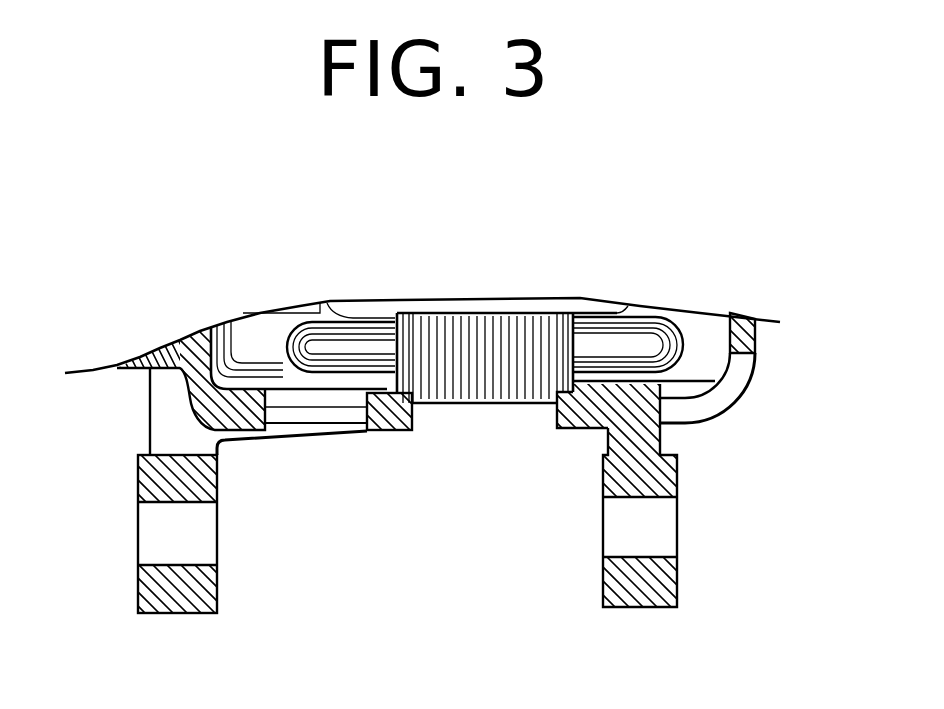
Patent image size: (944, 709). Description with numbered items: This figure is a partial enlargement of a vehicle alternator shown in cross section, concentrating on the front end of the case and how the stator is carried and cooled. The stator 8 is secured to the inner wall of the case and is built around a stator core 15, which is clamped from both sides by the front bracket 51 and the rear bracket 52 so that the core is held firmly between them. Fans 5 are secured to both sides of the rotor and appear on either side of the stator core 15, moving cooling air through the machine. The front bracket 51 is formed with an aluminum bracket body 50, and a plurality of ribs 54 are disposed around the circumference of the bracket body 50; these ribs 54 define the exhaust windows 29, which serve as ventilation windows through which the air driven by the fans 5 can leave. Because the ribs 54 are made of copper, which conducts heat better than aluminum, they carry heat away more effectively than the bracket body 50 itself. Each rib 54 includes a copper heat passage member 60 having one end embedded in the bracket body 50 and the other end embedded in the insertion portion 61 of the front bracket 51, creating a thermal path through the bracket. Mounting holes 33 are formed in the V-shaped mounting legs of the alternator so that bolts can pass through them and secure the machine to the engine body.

The stator 8 is at (491, 380).
The rear bracket 52 is at (118, 368).
The stator core 15 is at (474, 348).
The fans 5 is at (355, 347).
The exhaust windows 29 is at (292, 397).
The ribs 54 is at (347, 432).
The heat passage members 60 is at (300, 432).
The insertion portion 61 is at (413, 405).
The bracket body 50 is at (757, 333).
The front bracket 51 is at (678, 485).
The mounting holes 33 is at (173, 565).